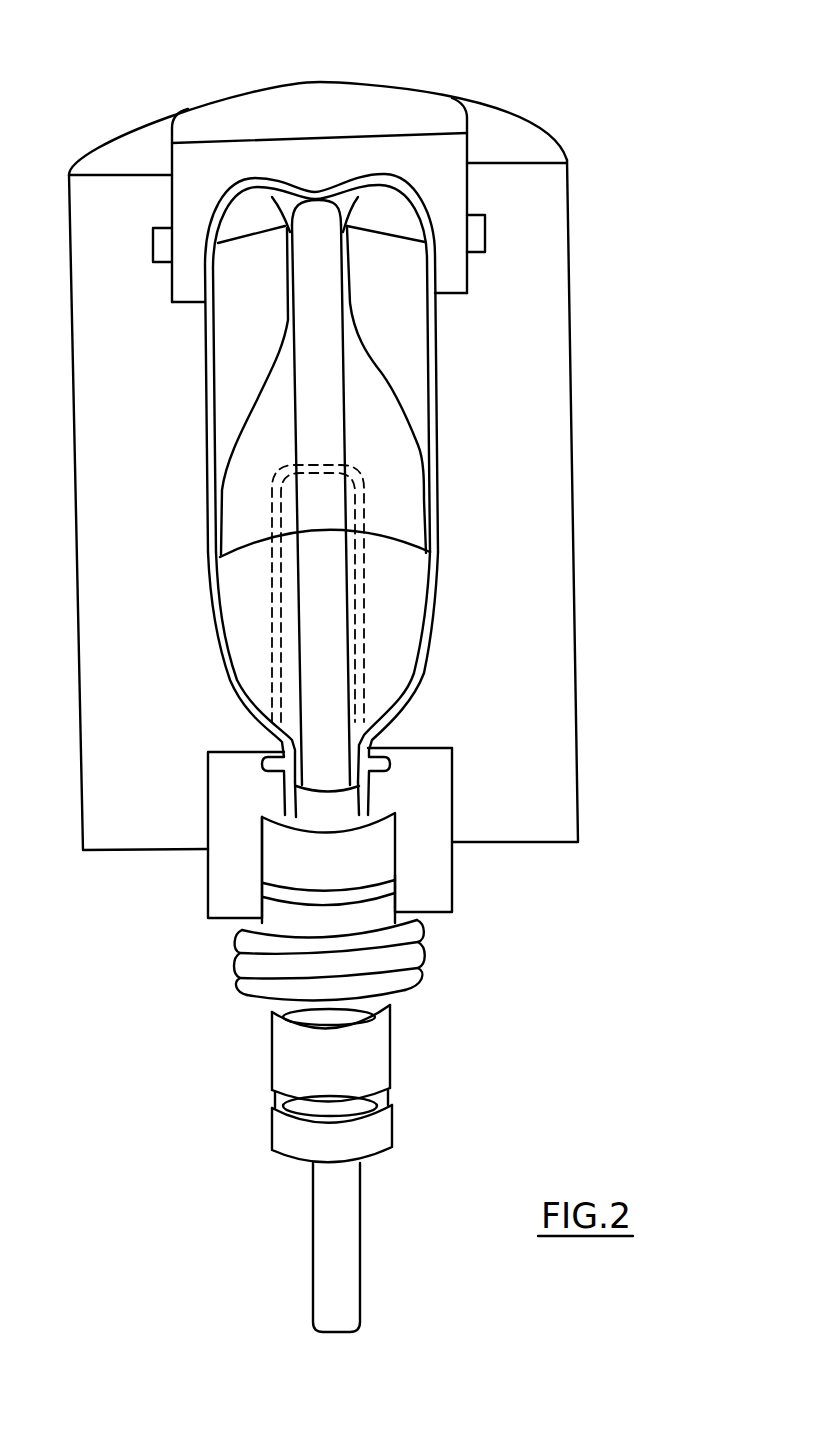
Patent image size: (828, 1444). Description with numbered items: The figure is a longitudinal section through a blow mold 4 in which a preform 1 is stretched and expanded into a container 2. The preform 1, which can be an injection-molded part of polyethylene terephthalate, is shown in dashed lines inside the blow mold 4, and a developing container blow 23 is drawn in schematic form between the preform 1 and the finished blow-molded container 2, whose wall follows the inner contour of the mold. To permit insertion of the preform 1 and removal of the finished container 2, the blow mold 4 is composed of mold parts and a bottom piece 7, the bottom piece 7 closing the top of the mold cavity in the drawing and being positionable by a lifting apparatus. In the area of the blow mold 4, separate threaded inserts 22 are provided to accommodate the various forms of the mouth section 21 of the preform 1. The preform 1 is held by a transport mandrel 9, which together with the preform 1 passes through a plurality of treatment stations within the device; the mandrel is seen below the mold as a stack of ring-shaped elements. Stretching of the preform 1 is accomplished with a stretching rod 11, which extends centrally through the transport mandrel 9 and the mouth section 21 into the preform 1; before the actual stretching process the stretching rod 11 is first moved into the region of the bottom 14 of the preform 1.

The preform 1 is at (365, 632).
The container 2 is at (433, 400).
The blow mold 4 is at (530, 470).
The bottom piece 7 is at (400, 97).
The transport mandrel 9 is at (410, 983).
The stretching rod 11 is at (313, 1261).
The bottom 14 is at (347, 465).
The mouth section 21 is at (368, 778).
The threaded inserts 22 is at (437, 870).
The developing container blow 23 is at (372, 360).